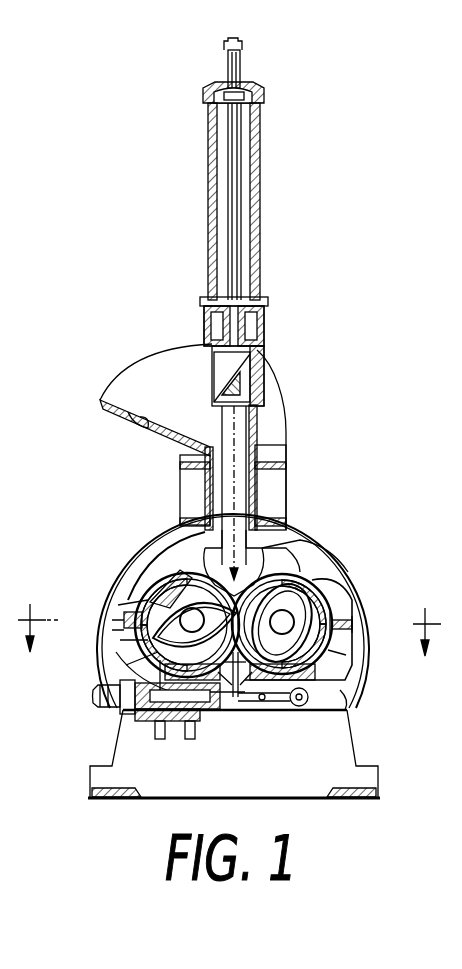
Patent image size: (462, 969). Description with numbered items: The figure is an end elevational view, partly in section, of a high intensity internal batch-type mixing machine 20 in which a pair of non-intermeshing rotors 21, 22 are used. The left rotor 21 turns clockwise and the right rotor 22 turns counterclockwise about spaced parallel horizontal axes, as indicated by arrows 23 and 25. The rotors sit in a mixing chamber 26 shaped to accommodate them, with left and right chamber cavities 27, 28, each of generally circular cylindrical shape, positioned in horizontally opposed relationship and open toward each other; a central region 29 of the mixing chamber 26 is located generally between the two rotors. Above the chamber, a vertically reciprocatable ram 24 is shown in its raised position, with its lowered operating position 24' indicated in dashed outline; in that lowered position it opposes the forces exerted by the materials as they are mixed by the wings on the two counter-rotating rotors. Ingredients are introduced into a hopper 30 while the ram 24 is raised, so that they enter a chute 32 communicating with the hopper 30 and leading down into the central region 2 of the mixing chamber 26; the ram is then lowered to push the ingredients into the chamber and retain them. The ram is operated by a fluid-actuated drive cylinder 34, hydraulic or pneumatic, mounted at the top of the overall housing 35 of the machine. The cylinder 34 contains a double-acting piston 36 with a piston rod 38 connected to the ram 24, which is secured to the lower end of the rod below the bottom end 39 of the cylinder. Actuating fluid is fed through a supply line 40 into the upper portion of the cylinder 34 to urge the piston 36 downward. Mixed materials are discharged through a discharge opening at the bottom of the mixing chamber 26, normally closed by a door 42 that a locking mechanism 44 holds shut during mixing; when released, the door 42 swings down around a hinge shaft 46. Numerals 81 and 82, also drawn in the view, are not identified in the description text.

The central region 2 is at (228, 637).
The internal mixing machine 20 is at (374, 286).
The left rotor 21 is at (158, 625).
The right rotor 22 is at (346, 660).
The arrow 23 is at (212, 582).
The ram 24 is at (271, 378).
The lowered operating position 24' is at (278, 493).
The arrow 25 is at (258, 586).
The mixing chamber 26 is at (150, 609).
The left chamber cavity 27 is at (135, 662).
The right chamber cavity 28 is at (322, 604).
The central region 29 is at (225, 558).
The hopper 30 is at (137, 386).
The chute 32 is at (263, 462).
The fluid-actuated drive cylinder 34 is at (262, 226).
The housing 35 is at (162, 530).
The double-acting piston 36 is at (260, 118).
The piston rod 38 is at (241, 278).
The bottom end 39 is at (264, 330).
The supply line 40 is at (243, 68).
The door 42 is at (250, 684).
The locking mechanism 44 is at (116, 716).
The hinge shaft 46 is at (312, 711).
The seal element 81 is at (160, 645).
The second rotor 82 is at (300, 598).